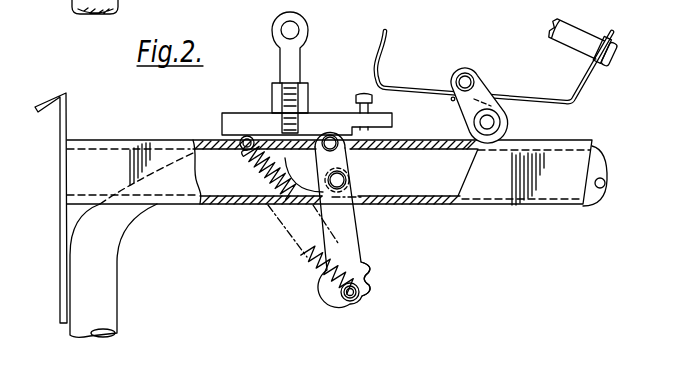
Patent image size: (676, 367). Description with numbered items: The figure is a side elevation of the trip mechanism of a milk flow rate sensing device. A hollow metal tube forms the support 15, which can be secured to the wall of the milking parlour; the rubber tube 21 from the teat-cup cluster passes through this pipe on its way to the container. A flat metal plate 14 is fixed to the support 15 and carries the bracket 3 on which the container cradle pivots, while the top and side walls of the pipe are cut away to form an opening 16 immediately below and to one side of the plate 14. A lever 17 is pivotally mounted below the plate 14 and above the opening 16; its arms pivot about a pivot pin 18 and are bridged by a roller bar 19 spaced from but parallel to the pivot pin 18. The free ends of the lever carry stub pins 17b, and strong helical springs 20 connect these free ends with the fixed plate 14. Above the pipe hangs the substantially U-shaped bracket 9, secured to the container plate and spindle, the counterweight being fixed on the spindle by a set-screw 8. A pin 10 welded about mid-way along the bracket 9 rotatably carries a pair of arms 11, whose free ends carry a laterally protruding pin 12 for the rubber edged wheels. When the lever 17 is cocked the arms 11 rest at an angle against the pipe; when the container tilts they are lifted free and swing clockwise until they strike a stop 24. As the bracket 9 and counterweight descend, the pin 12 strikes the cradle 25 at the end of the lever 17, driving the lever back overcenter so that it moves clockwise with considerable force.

The bracket 3 is at (285, 61).
The set-screw 8 is at (563, 18).
The U-shaped bracket 9 is at (580, 100).
The pin 10 is at (473, 78).
The arms 11 is at (478, 95).
The pin 12 is at (500, 123).
The flat metal plate 14 is at (232, 113).
The support 15 is at (498, 205).
The opening 16 is at (286, 185).
The lever 17 is at (361, 230).
The stub pins 17b is at (352, 293).
The pivot pin 18 is at (328, 130).
The roller bar 19 is at (348, 173).
The helical springs 20 is at (306, 259).
The rubber tube 21 is at (593, 198).
The stop 24 is at (451, 100).
The cradle 25 is at (368, 272).